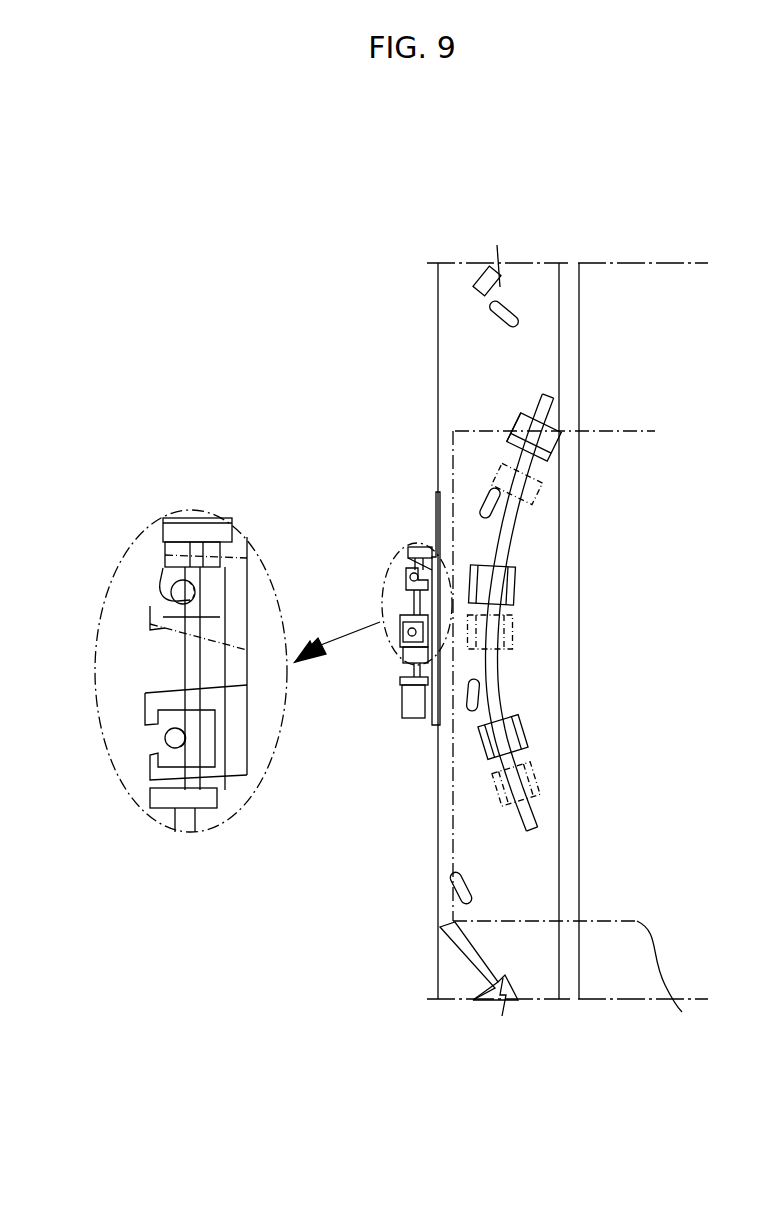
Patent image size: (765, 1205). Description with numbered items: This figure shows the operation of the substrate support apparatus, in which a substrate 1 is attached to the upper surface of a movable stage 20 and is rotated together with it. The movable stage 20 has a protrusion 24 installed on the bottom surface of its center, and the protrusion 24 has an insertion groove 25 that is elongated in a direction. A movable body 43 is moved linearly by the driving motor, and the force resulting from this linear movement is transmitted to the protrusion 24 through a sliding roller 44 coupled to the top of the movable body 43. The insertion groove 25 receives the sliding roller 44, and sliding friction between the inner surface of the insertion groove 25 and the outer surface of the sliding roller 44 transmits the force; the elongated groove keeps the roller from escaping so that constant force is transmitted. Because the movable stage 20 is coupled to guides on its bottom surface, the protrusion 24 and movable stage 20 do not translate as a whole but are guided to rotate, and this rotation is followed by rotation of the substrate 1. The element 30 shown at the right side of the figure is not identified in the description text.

The substrate 1 is at (666, 971).
The movable stage 20 is at (462, 1012).
The process chamber 30 is at (610, 1020).
The protrusion 24 is at (167, 548).
The insertion groove 25 is at (150, 580).
The movable body 43 is at (157, 613).
The sliding roller 44 is at (172, 588).